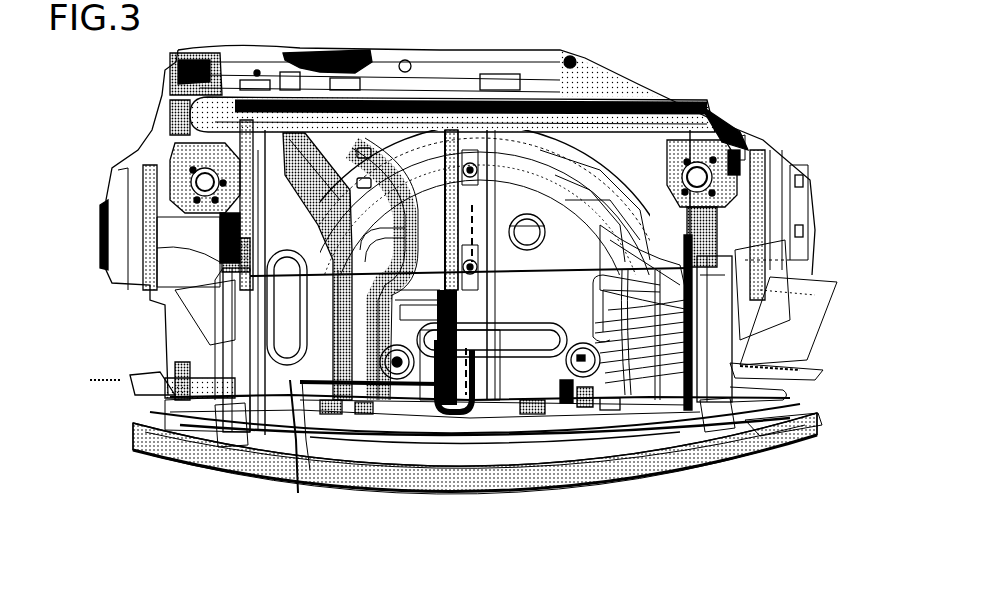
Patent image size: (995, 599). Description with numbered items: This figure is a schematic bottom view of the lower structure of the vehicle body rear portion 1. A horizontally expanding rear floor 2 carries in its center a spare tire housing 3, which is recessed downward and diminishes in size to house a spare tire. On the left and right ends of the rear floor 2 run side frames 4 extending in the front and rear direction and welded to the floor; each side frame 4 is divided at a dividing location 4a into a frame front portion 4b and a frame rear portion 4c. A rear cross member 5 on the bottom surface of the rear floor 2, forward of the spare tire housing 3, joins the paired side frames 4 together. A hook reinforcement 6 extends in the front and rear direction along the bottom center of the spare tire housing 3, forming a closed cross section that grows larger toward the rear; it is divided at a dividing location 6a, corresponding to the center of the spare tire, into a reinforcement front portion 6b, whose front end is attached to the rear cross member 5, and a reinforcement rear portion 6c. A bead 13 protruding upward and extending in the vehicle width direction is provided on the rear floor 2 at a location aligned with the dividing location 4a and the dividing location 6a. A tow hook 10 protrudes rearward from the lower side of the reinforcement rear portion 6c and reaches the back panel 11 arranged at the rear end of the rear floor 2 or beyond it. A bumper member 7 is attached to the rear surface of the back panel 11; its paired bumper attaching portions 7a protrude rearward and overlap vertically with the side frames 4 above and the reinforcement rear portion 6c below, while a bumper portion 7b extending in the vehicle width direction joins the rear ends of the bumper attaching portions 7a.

The vehicle body rear portion 1 is at (132, 503).
The rear floor 2 is at (298, 493).
The spare tire housing 3 is at (578, 165).
The side frame 4 is at (226, 323).
The dividing location 4a is at (225, 292).
The frame front portion 4b is at (228, 268).
The frame rear portion 4c is at (228, 352).
The rear cross member 5 is at (497, 90).
The hook reinforcement 6 is at (438, 192).
The dividing location 6a is at (480, 278).
The reinforcement front portion 6b is at (470, 162).
The reinforcement rear portion 6c is at (502, 434).
The bumper member 7 is at (357, 489).
The bumper attaching portion 7a is at (243, 438).
The bumper portion 7b is at (640, 474).
The tow hook 10 is at (443, 423).
The back panel 11 is at (140, 381).
The bead 13 is at (618, 262).